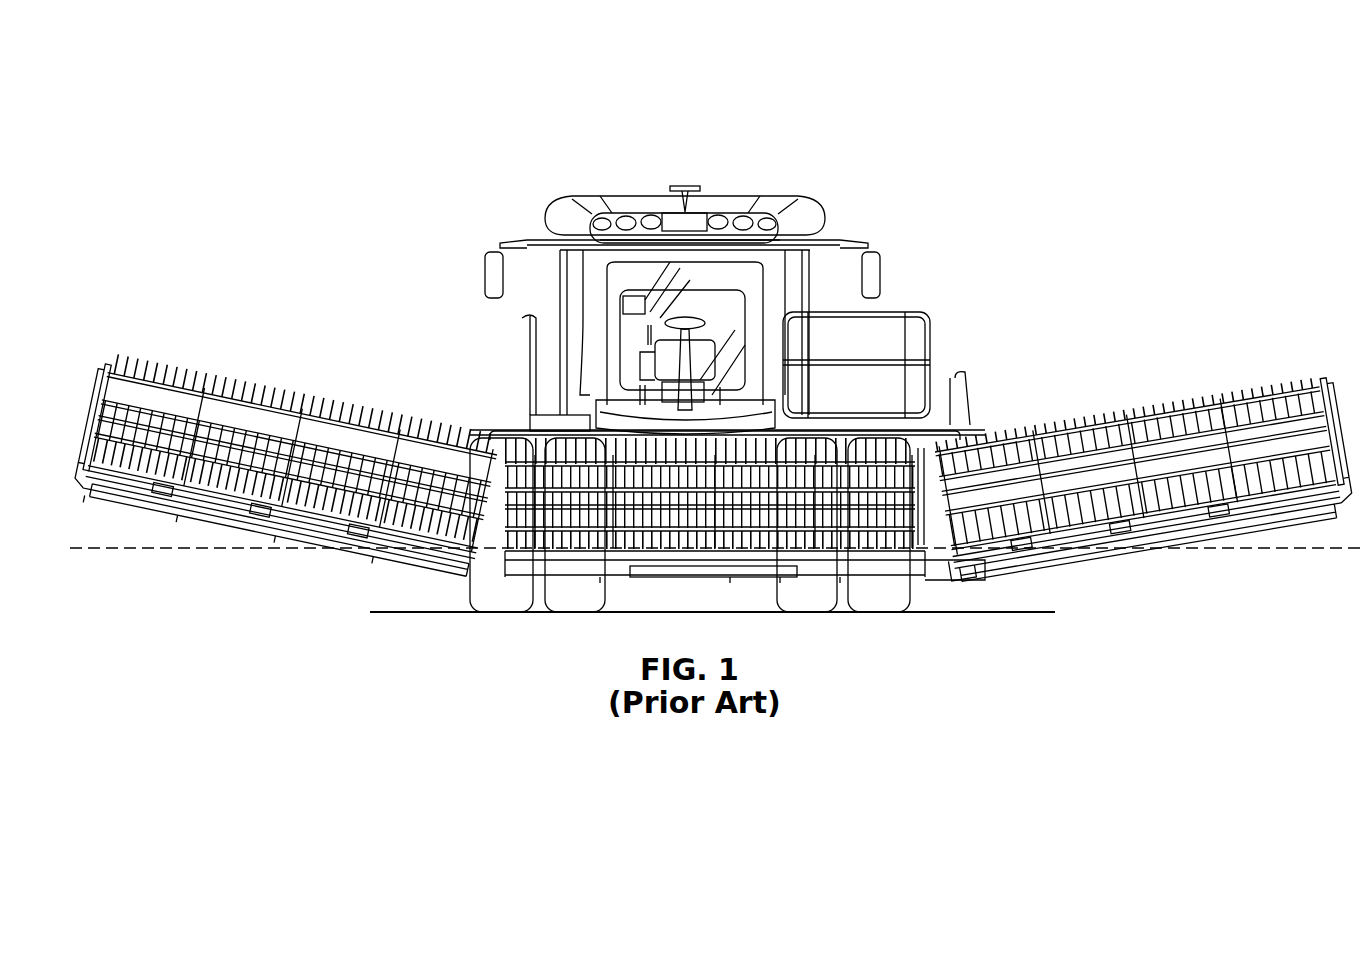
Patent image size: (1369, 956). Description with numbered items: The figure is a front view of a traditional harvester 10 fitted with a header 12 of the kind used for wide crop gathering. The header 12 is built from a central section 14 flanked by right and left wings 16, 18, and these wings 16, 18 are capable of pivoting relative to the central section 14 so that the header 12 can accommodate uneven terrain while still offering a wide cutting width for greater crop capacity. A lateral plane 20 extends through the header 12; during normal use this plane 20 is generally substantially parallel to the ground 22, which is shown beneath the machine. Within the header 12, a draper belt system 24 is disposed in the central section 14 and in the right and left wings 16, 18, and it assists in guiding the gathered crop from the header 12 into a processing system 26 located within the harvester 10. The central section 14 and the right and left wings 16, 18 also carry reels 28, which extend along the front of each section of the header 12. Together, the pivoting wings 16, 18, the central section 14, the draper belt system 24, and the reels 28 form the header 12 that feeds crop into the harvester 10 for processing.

The harvester 10 is at (771, 85).
The header 12 is at (1056, 412).
The central section 14 is at (508, 413).
The right wing 16 is at (173, 360).
The left wing 18 is at (1267, 376).
The lateral plane 20 is at (1282, 550).
The ground 22 is at (1010, 614).
The draper belt system 24 is at (361, 488).
The processing system 26 is at (553, 355).
The reels 28 is at (872, 455).